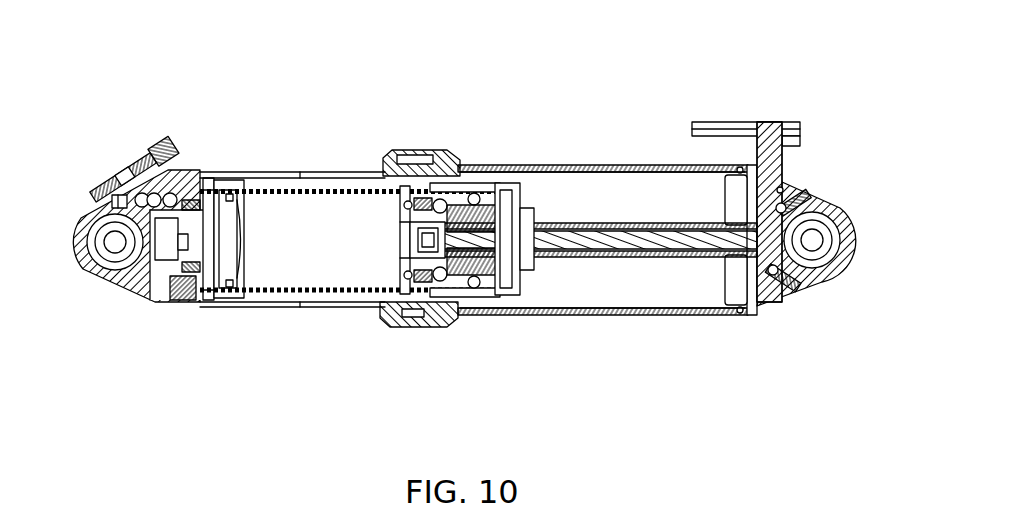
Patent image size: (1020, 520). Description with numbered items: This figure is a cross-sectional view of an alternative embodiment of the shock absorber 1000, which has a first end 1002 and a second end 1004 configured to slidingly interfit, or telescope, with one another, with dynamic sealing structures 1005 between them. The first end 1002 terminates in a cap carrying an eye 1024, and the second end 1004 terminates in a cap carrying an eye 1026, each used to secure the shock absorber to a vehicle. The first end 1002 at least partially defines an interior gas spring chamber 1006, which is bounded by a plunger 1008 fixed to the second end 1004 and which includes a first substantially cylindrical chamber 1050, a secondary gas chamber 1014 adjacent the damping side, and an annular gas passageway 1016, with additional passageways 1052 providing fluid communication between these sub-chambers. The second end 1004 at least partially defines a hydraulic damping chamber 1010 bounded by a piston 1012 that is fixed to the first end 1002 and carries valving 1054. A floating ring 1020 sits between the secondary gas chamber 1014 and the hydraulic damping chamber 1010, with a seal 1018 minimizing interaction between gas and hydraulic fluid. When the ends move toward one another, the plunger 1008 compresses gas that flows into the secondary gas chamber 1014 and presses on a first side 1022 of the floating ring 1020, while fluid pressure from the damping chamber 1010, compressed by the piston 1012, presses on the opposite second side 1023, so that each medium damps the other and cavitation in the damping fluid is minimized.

The shock absorber 1000 is at (493, 68).
The first end 1002 is at (613, 134).
The second end 1004 is at (306, 152).
The dynamic sealing structures 1005 is at (545, 292).
The interior gas spring chamber 1006 is at (607, 290).
The plunger 1008 is at (507, 303).
The hydraulic damping chamber 1010 is at (273, 276).
The piston 1012 is at (398, 262).
The secondary gas chamber 1014 is at (203, 283).
The gas passageway 1016 is at (322, 300).
The seal 1018 is at (231, 192).
The floating ring 1020 is at (241, 192).
The first side 1022 is at (213, 222).
The second side 1023 is at (237, 240).
The eye 1024 is at (820, 280).
The eye 1026 is at (106, 282).
The first substantially cylindrical chamber 1050 is at (688, 208).
The passageways 1052 is at (165, 319).
The valving 1054 is at (384, 201).